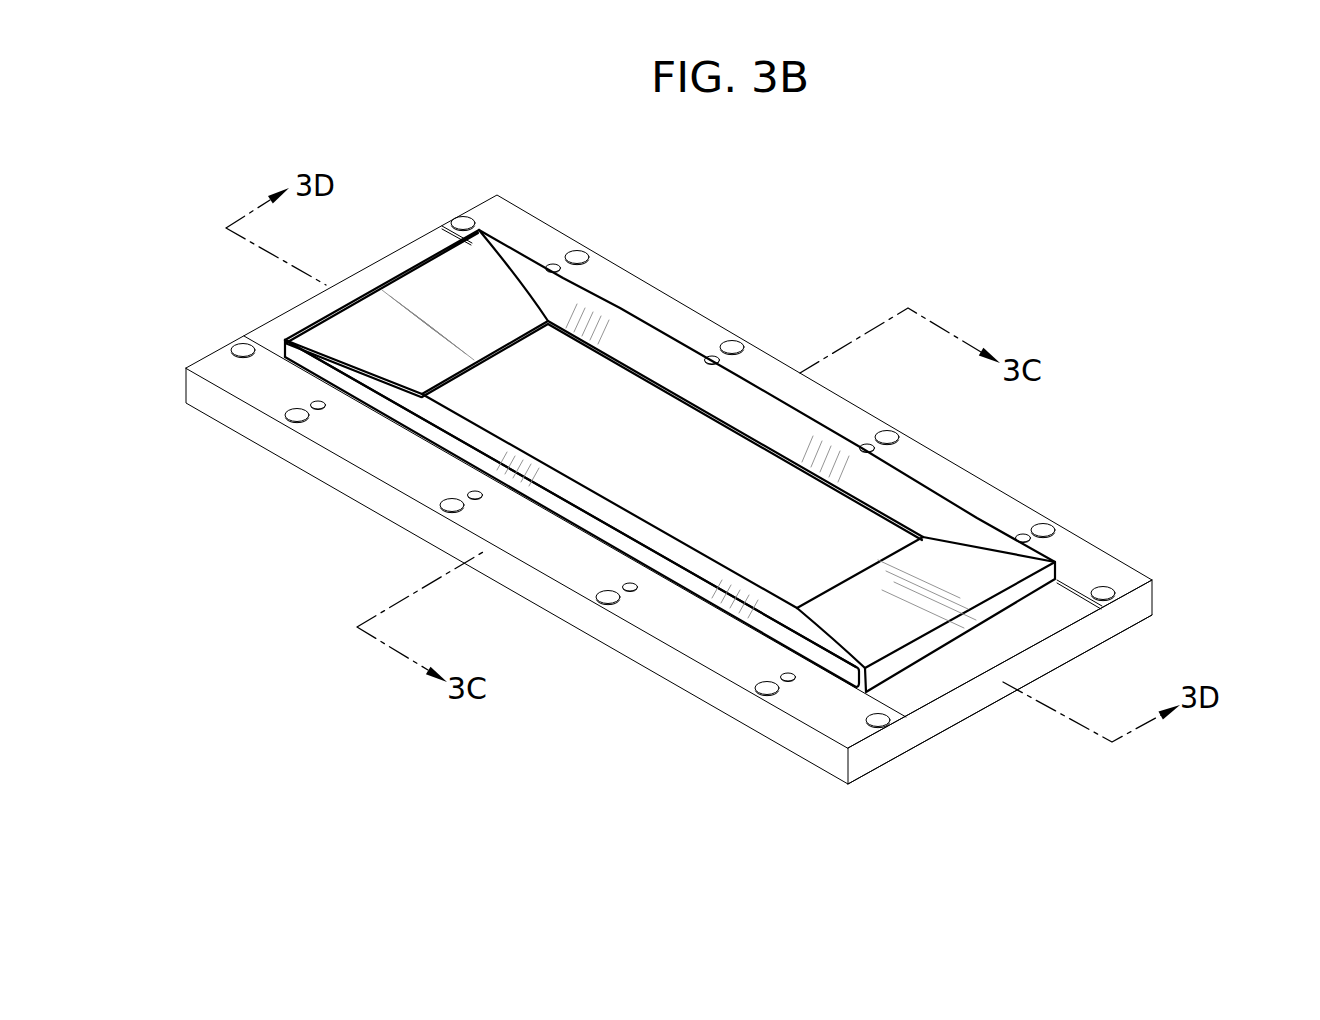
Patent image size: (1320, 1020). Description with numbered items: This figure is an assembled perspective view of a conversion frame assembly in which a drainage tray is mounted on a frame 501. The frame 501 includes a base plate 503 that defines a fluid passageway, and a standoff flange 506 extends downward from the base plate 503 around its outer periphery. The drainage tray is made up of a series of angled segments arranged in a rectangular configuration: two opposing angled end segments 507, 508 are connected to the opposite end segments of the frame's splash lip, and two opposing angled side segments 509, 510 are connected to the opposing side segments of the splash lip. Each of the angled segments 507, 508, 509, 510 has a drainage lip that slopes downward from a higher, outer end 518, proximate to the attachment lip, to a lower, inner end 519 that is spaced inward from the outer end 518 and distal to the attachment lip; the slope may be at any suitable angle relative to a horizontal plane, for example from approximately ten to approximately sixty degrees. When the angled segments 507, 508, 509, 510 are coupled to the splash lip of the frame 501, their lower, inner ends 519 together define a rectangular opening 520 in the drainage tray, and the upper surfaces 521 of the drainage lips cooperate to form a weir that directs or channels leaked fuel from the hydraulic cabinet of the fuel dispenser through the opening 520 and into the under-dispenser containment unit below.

The frame 501 is at (693, 761).
The base plate 503 is at (920, 703).
The standoff flange 506 is at (903, 738).
The angled end segment 507 is at (350, 333).
The angled end segment 508 is at (960, 567).
The angled side segment 509 is at (451, 440).
The angled side segment 510 is at (694, 425).
The higher, outer end 518 is at (410, 266).
The lower, inner end 519 is at (507, 347).
The opening 520 is at (825, 540).
The upper surfaces 521 is at (505, 319).